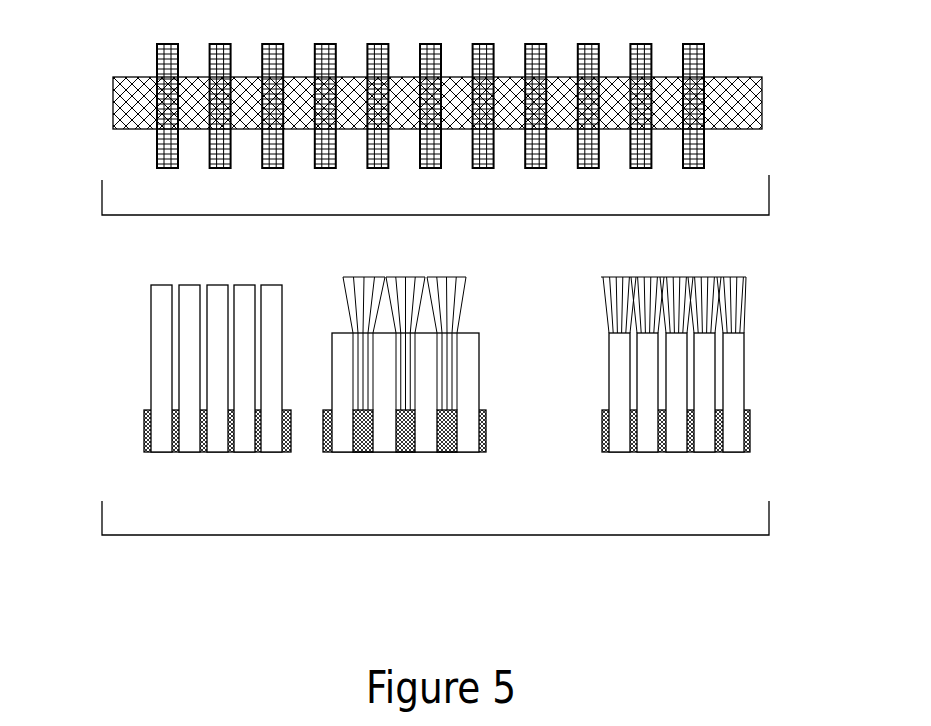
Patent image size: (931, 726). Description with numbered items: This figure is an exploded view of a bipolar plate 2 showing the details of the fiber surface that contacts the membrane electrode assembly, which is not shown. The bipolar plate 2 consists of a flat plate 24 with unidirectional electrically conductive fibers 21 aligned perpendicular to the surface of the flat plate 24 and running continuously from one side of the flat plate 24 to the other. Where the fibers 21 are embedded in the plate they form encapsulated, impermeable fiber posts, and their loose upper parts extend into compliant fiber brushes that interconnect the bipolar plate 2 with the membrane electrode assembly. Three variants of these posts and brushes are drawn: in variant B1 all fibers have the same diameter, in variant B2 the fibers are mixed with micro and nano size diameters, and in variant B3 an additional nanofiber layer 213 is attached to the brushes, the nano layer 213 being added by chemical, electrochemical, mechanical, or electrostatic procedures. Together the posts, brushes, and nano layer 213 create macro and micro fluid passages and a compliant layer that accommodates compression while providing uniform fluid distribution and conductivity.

The bipolar plate 2 is at (388, 215).
The electrically conductive fibers 21 is at (712, 152).
The flat plate 24 is at (113, 97).
The nanofiber layer 213 is at (759, 277).
The same-diameter fiber embodiment B1 is at (159, 244).
The mixed micro and nano fiber embodiment B2 is at (446, 382).
The nanofiber layer embodiment B3 is at (717, 382).